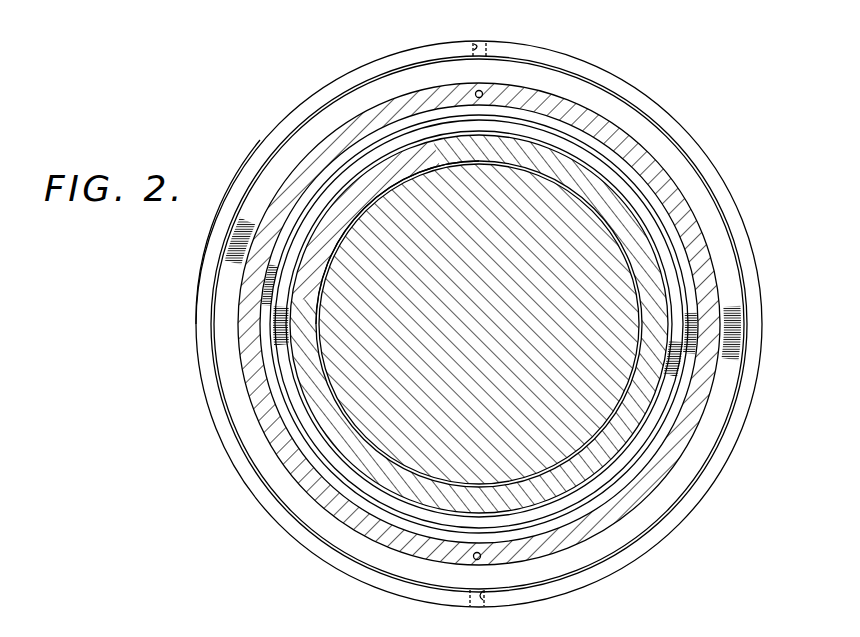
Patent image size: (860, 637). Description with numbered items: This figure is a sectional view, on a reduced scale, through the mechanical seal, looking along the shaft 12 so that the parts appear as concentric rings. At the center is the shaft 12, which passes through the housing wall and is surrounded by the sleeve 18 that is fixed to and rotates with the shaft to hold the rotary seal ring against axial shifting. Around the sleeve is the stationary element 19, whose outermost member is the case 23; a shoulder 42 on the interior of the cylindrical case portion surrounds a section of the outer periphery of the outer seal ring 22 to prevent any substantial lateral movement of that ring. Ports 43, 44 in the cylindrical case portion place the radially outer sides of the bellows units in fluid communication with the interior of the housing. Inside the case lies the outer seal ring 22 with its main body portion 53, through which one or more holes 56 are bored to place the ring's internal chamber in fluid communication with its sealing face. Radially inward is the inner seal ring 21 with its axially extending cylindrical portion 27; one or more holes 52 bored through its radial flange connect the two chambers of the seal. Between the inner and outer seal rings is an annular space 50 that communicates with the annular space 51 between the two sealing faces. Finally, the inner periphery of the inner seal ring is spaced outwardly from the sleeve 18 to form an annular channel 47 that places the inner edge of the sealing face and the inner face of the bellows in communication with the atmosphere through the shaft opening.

The shaft 12 is at (446, 319).
The sleeve 18 is at (360, 411).
The stationary element 19 is at (301, 113).
The inner seal ring 21 is at (646, 228).
The outer seal ring 22 is at (364, 101).
The case 23 is at (206, 272).
The cylindrical portion 27 is at (461, 148).
The shoulder 42 is at (734, 404).
The port 43 is at (305, 636).
The port 44 is at (476, 44).
The annular channel 47 is at (636, 322).
The annular space 50 is at (298, 422).
The annular space 51 is at (692, 301).
The hole 52 is at (345, 627).
The main body portion 53 is at (640, 498).
The hole 56 is at (482, 92).